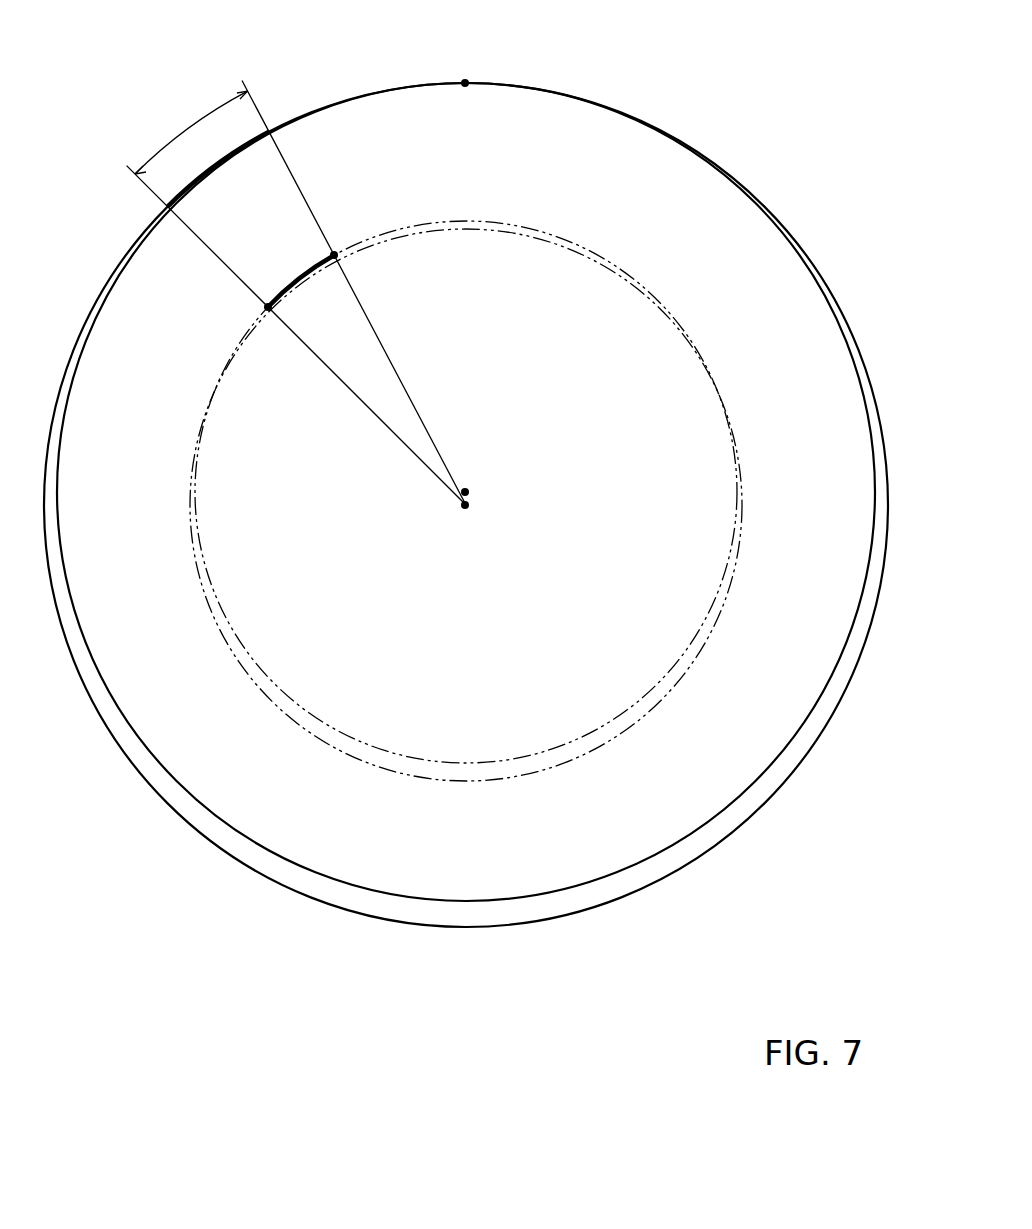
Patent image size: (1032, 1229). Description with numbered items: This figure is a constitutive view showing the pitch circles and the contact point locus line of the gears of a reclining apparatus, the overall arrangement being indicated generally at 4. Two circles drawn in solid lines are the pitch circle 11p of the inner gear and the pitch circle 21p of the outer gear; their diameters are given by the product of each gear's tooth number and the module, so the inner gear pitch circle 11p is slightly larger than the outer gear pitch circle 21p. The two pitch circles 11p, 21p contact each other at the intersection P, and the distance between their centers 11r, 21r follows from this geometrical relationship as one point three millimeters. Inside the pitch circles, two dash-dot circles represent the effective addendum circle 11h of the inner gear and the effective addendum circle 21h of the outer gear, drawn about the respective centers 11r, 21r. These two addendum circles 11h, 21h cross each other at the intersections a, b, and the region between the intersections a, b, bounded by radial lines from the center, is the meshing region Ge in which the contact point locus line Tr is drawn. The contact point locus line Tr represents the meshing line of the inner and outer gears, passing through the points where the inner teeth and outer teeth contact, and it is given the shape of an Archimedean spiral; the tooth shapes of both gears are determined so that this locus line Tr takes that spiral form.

The display device / holder assembly 4 is at (466, 527).
The pitch circle of the inner gear 11p is at (392, 920).
The pitch circle of the outer gear 21p is at (490, 900).
The effective addendum circle of the inner gear 11h is at (503, 232).
The effective addendum circle of the outer gear 21h is at (455, 220).
The center of the inner gear pitch circle 11r is at (469, 505).
The center of the outer gear pitch circle 21r is at (469, 492).
The intersection P is at (466, 82).
The intersection a is at (268, 317).
The intersection b is at (338, 257).
The meshing region Ge is at (188, 128).
The contact point locus line Tr is at (297, 280).